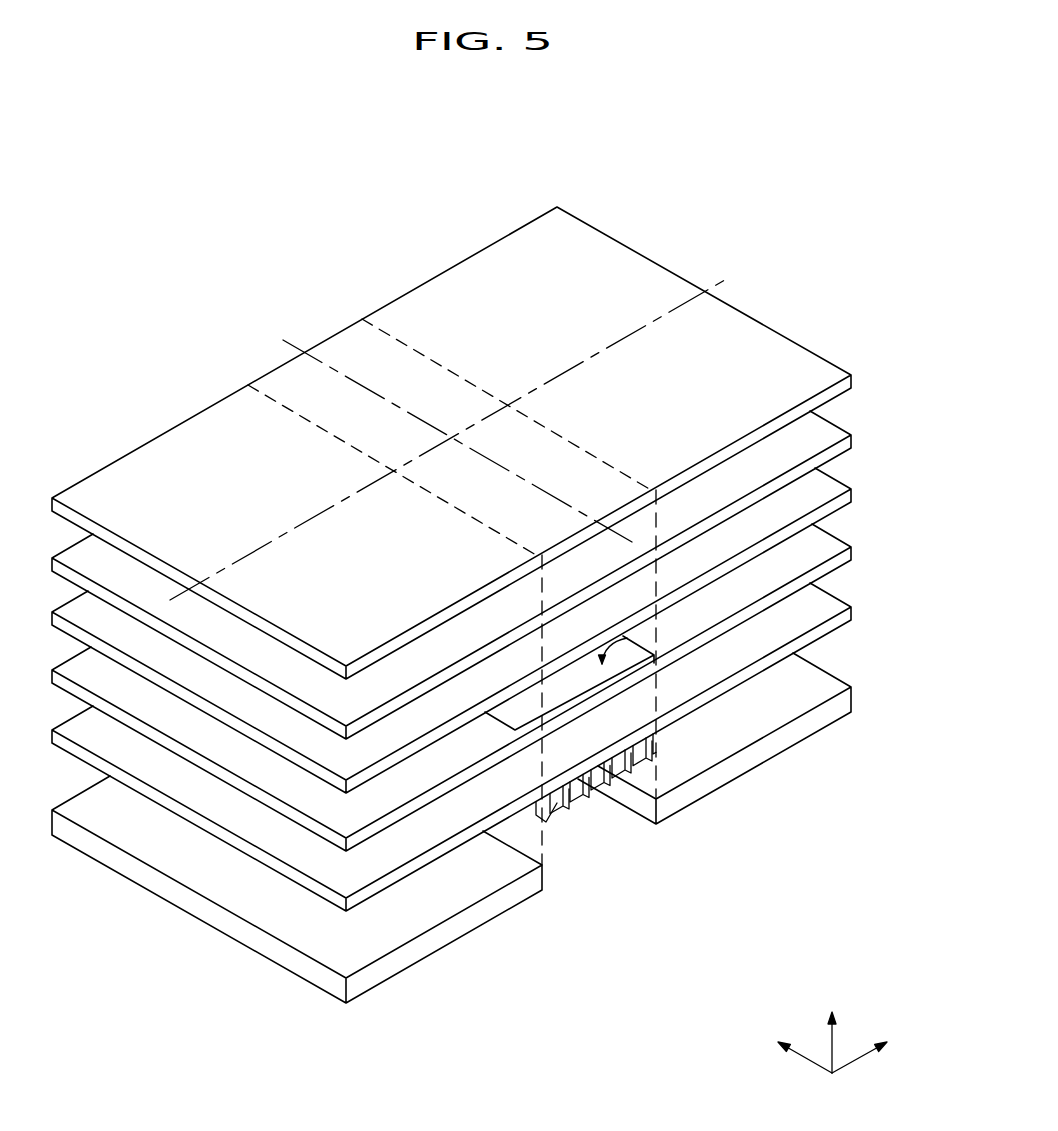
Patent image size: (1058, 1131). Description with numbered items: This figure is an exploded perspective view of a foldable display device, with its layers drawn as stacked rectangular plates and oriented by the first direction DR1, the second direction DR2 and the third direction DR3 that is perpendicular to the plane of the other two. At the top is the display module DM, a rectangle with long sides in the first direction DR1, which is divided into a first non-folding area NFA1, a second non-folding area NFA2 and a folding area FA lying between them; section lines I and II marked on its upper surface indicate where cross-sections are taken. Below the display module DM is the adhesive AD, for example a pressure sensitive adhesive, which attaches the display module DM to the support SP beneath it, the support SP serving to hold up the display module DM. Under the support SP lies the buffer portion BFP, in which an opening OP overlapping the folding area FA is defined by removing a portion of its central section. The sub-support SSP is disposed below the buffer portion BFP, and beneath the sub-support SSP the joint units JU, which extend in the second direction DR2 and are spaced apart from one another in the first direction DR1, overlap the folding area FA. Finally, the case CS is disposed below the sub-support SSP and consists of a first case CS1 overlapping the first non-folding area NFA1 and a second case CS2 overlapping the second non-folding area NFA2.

The display module DM is at (862, 383).
The adhesive AD is at (862, 440).
The support SP is at (862, 495).
The buffer portion BFP is at (862, 553).
The sub-support SSP is at (862, 613).
The case CS is at (493, 828).
The first case CS1 is at (443, 937).
The second case CS2 is at (753, 758).
The joint units JU is at (556, 802).
The opening OP is at (625, 637).
The folding area FA is at (347, 349).
The first non-folding area NFA1 is at (168, 450).
The second non-folding area NFA2 is at (467, 277).
The section line I-I' I is at (170, 600).
The section line II-II' II is at (283, 340).
The first direction DR1 is at (883, 1050).
The second direction DR2 is at (782, 1050).
The third direction DR3 is at (833, 1029).